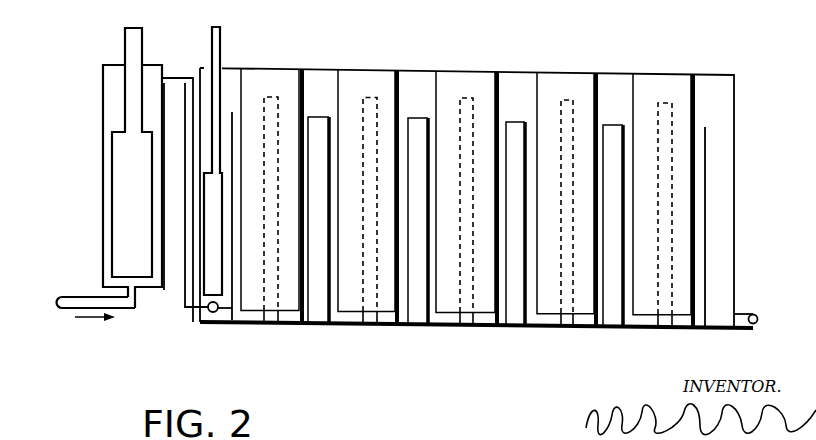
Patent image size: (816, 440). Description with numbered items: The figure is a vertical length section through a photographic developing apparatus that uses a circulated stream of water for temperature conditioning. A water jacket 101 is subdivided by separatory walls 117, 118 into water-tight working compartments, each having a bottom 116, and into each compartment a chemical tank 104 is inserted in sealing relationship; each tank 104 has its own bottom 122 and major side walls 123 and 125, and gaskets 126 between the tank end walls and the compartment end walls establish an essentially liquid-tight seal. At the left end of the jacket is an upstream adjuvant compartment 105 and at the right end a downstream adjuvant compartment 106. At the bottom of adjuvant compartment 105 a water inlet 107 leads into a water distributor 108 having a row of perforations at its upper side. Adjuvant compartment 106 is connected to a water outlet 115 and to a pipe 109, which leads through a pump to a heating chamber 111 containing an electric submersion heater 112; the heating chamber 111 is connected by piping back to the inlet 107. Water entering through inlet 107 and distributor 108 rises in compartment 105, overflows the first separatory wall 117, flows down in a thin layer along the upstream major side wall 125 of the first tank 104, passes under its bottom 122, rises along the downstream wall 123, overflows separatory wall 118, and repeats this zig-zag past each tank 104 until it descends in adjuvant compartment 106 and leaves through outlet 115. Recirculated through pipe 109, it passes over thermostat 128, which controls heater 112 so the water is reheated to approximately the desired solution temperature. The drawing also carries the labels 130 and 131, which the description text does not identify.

The water jacket 101 is at (735, 176).
The tank 104 is at (287, 82).
The adjuvant compartment 105 is at (207, 70).
The adjuvant compartment 106 is at (718, 112).
The water inlet 107 is at (190, 313).
The water distributor 108 is at (215, 313).
The pipe 109 is at (66, 312).
The heating chamber 111 is at (103, 86).
The electric submersion heater 112 is at (112, 160).
The water outlet 115 is at (748, 313).
The bottom 116 is at (543, 328).
The separatory wall 117 is at (232, 316).
The separatory wall 118 is at (310, 312).
The bottom 122 is at (482, 327).
The major side wall 123 is at (303, 83).
The major side wall 125 is at (243, 78).
The gasket 126 is at (275, 315).
The thermostat 128 is at (213, 40).
The lead 130 is at (727, 5).
The cover 131 is at (499, 11).